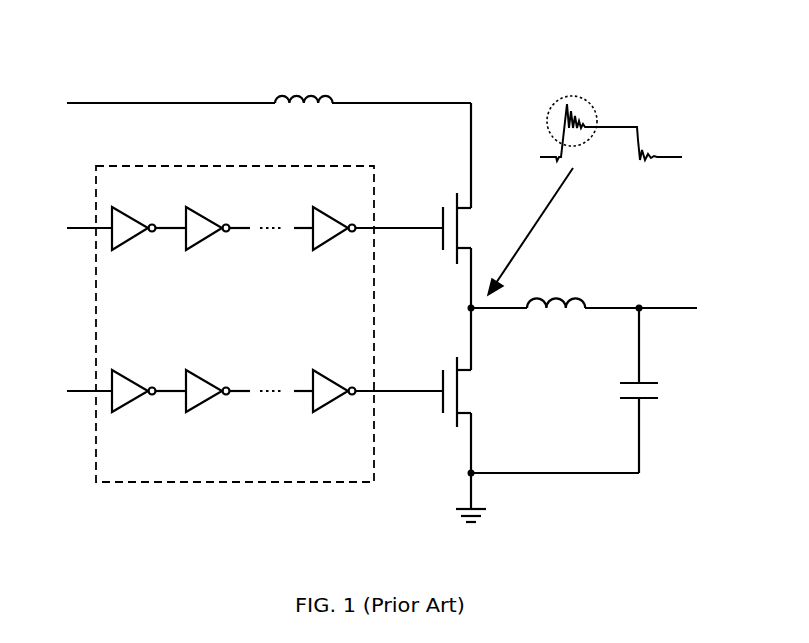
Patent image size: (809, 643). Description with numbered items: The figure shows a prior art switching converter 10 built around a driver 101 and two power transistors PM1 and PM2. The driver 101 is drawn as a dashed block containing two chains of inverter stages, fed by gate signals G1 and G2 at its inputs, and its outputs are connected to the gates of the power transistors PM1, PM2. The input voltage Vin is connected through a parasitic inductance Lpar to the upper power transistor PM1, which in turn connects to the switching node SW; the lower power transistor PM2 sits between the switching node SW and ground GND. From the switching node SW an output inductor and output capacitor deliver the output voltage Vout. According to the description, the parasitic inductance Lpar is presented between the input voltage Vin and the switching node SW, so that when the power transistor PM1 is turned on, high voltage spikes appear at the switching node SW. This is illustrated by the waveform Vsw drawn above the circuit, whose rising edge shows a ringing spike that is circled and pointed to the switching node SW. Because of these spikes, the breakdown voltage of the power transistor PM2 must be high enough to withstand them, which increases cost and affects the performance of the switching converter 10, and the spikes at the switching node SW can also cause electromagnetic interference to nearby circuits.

The switching converter 10 is at (372, 30).
The driver 101 is at (138, 166).
The power transistor PM1 is at (484, 228).
The power transistor PM2 is at (485, 392).
The parasitic inductance Lpar is at (304, 82).
The switching node SW is at (477, 308).
The input voltage Vin is at (150, 103).
The output voltage Vout is at (667, 308).
The ground GND is at (473, 512).
The first gate signal G1 is at (71, 228).
The second gate signal G2 is at (71, 391).
The switching node voltage waveform Vsw is at (606, 195).